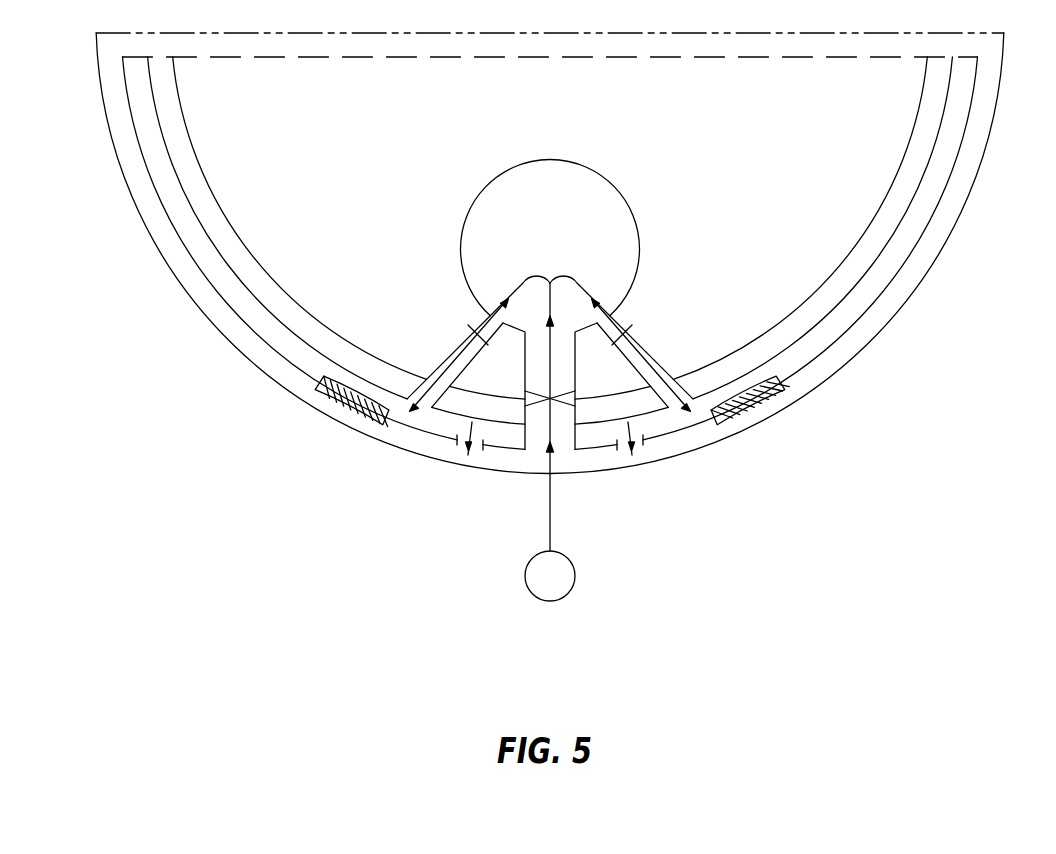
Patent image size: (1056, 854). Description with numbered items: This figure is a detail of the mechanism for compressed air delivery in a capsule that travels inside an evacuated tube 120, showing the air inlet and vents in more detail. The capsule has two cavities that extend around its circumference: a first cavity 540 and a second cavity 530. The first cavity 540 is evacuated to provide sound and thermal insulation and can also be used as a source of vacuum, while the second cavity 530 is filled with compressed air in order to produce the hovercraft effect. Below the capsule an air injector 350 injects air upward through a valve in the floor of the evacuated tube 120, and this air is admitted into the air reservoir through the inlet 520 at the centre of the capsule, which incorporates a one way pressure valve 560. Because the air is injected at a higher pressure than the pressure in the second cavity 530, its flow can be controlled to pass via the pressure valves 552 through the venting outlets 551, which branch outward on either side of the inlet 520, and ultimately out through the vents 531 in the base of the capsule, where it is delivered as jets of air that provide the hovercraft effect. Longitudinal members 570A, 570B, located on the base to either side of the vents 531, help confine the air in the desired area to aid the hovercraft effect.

The evacuated tube 120 is at (830, 378).
The second cavity 530 is at (885, 266).
The first cavity 540 is at (898, 200).
The inlet 520 is at (540, 432).
The vents 531 is at (460, 444).
The venting outlets 551 is at (445, 362).
The pressure valves 552 is at (470, 327).
The one way pressure valve 560 is at (562, 405).
The longitudinal member 570A is at (350, 414).
The longitudinal member 570B is at (754, 414).
The air injector 350 is at (568, 562).